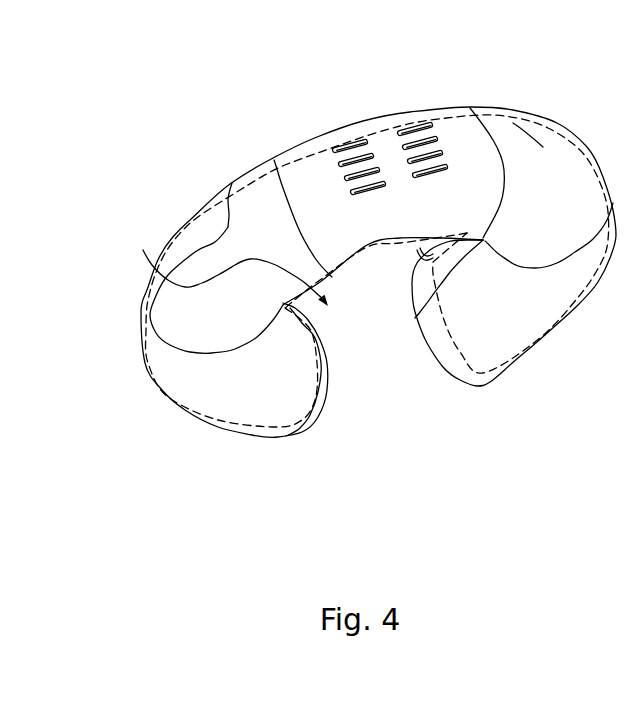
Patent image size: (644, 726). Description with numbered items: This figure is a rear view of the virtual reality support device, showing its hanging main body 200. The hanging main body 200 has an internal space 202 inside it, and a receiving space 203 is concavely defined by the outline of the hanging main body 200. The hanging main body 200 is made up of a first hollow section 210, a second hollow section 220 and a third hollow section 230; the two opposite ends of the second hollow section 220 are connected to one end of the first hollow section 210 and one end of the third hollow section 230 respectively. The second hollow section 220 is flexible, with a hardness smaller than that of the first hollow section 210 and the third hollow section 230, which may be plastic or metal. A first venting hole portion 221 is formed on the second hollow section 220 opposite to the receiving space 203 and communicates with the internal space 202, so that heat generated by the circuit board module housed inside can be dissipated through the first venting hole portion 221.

The hanging main body 200 is at (568, 138).
The internal space 202 is at (535, 478).
The receiving space 203 is at (215, 270).
The first hollow section 210 is at (502, 350).
The second hollow section 220 is at (380, 228).
The first venting hole portion 221 is at (403, 134).
The third hollow section 230 is at (273, 413).